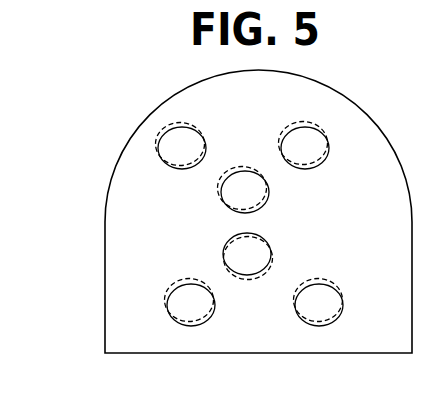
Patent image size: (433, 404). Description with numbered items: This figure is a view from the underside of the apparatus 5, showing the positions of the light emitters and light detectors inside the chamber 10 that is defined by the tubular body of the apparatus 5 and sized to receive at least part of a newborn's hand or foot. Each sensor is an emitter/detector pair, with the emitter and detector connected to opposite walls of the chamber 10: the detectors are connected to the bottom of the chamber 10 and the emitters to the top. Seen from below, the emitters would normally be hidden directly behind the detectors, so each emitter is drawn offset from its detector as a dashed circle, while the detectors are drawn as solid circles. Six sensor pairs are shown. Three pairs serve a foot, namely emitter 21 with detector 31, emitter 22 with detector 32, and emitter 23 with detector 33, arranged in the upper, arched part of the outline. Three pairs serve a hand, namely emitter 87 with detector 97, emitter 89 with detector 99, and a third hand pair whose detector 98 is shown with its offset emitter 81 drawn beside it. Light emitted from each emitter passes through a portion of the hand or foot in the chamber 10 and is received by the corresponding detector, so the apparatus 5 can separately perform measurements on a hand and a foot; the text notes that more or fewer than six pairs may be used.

The apparatus 5 is at (214, 209).
The chamber 10 is at (124, 316).
The light emitter 21 is at (314, 119).
The light emitter 22 is at (276, 184).
The light emitter 23 is at (177, 118).
The light detector 31 is at (293, 158).
The light detector 32 is at (233, 202).
The light detector 33 is at (170, 158).
The fourth alignment region 81 is at (274, 252).
The light emitter 87 is at (343, 287).
The light emitter 89 is at (183, 276).
The light detector 97 is at (307, 315).
The light detector 98 is at (235, 264).
The light detector 99 is at (179, 315).